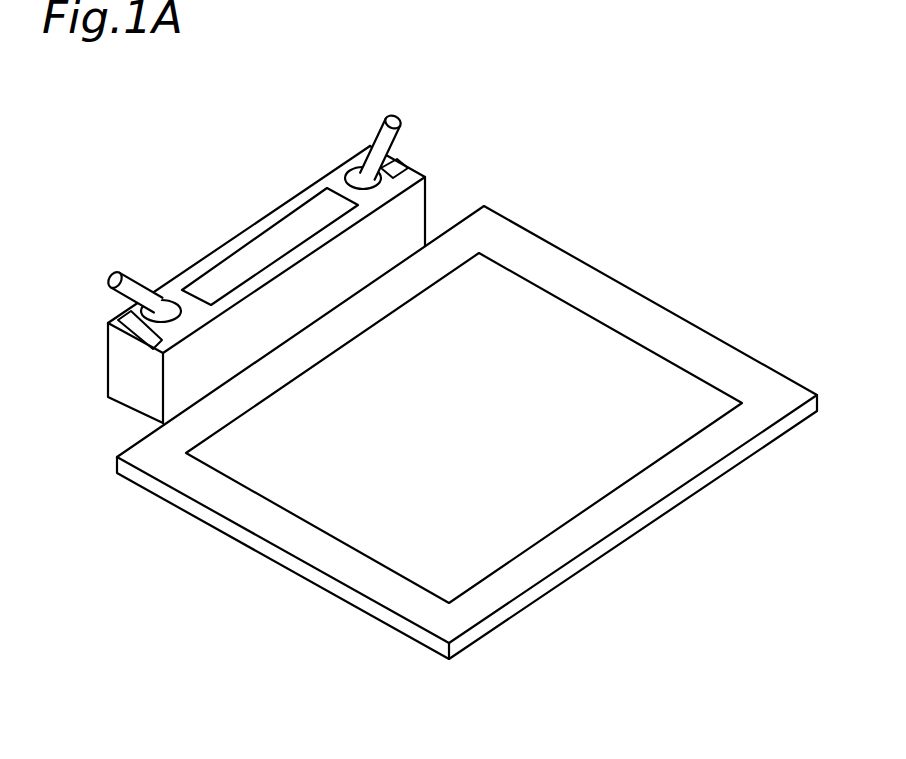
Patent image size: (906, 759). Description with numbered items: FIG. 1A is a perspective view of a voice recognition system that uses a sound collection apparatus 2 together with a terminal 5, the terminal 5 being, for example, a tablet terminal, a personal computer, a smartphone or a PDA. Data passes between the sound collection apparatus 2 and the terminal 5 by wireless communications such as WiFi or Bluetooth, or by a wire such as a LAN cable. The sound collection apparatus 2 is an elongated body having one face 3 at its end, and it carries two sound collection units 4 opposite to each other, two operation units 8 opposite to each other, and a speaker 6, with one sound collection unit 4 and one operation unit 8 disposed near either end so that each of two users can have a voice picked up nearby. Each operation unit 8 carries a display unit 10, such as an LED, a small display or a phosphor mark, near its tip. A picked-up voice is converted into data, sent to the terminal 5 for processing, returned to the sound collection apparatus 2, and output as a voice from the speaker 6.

The sound collection apparatus 2 is at (250, 239).
The face of the sound collection apparatus 3 is at (118, 365).
The sound collection unit 4 is at (118, 313).
The terminal 5 is at (618, 303).
The speaker 6 is at (312, 207).
The operation unit 8 is at (256, 188).
The display unit 10 is at (116, 276).